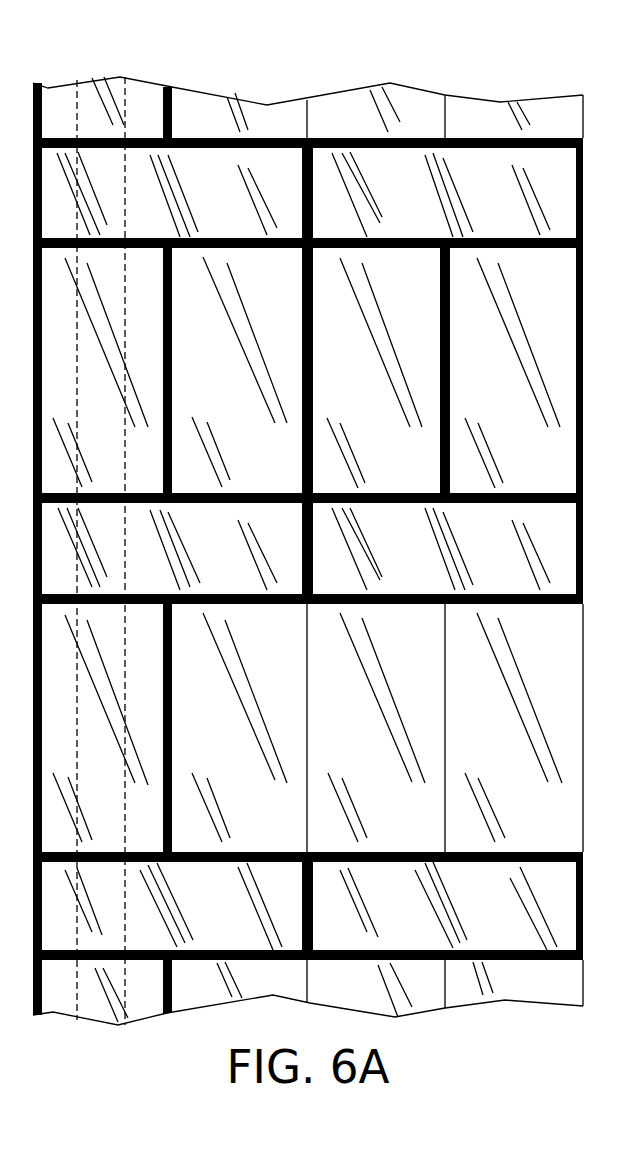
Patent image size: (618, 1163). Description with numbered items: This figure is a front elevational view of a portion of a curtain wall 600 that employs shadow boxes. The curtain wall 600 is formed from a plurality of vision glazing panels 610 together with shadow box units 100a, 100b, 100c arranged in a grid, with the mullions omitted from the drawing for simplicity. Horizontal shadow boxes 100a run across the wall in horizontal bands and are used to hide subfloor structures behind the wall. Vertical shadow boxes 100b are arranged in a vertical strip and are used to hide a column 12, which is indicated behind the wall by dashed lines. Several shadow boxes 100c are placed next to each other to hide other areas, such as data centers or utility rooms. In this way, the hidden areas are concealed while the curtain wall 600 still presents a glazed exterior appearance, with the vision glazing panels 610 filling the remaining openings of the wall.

The curtain wall 600 is at (585, 77).
The vision glazing panel 610 is at (187, 126).
The horizontal shadow box 100a is at (196, 213).
The vertical shadow box 100b is at (87, 89).
The shadow box 100c is at (336, 397).
The column 12 is at (125, 117).